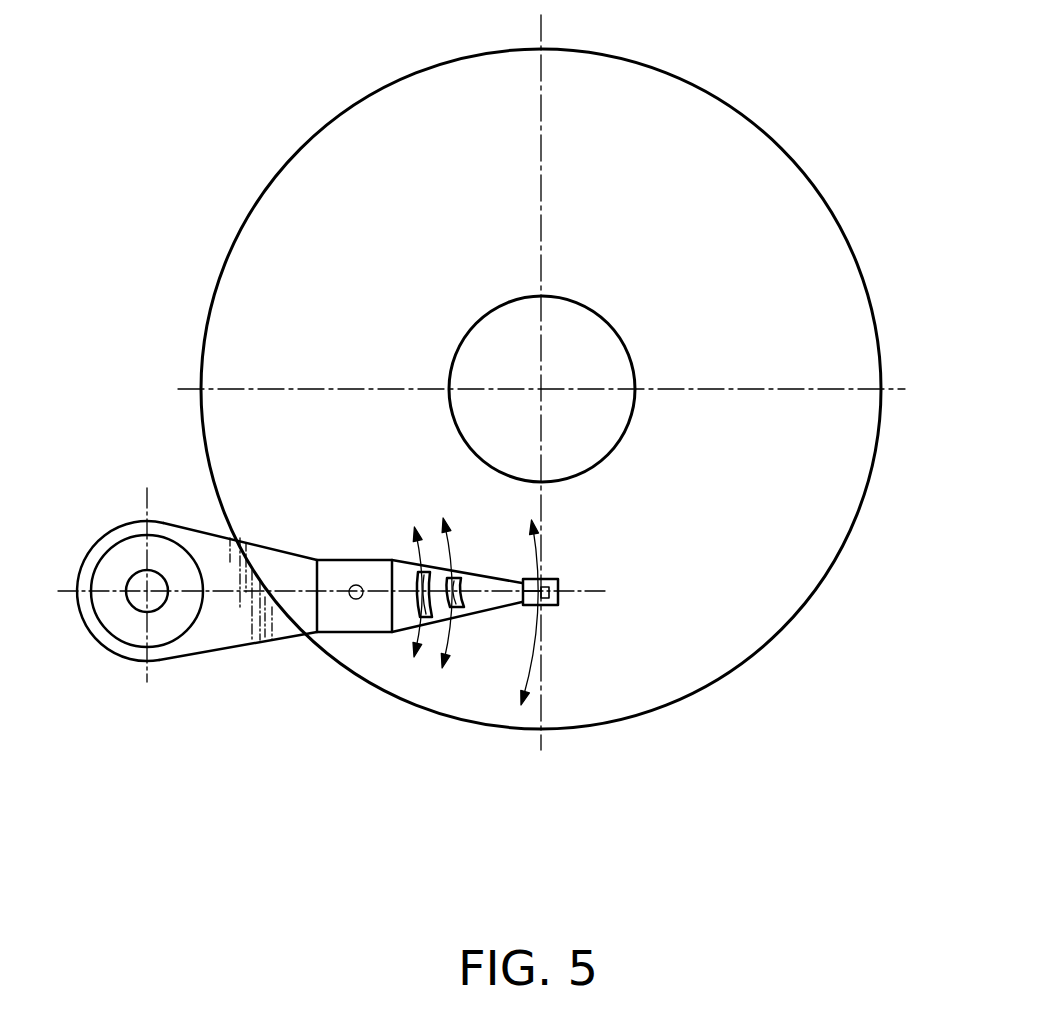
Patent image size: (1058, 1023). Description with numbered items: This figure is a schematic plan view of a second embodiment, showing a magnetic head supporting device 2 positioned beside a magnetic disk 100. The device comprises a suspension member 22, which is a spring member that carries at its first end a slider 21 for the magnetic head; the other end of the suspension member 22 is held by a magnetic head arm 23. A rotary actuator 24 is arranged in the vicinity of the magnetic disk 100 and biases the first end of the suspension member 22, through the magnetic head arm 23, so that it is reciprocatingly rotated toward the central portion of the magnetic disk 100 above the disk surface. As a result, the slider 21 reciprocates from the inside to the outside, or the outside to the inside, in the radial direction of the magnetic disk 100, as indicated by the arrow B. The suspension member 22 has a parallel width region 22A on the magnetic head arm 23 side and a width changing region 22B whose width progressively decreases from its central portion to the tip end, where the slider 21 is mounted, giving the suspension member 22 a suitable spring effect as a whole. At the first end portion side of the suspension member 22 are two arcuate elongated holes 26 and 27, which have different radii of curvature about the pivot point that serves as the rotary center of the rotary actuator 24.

The magnetic disk 100 is at (654, 111).
The magnetic head supporting device 2 is at (67, 812).
The slider 21 is at (570, 604).
The suspension member 22 is at (399, 644).
The parallel width region 22A is at (332, 572).
The width changing region 22B is at (402, 622).
The magnetic head arm 23 is at (243, 625).
The rotary actuator 24 is at (120, 642).
The arcuate elongated hole 26 is at (418, 583).
The arcuate elongated hole 27 is at (453, 578).
The arrow B is at (414, 657).